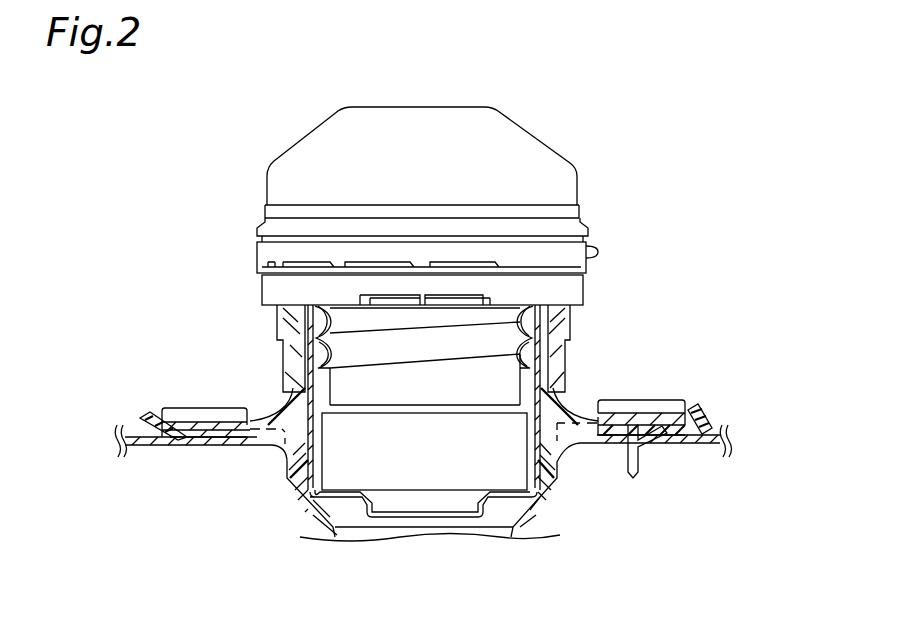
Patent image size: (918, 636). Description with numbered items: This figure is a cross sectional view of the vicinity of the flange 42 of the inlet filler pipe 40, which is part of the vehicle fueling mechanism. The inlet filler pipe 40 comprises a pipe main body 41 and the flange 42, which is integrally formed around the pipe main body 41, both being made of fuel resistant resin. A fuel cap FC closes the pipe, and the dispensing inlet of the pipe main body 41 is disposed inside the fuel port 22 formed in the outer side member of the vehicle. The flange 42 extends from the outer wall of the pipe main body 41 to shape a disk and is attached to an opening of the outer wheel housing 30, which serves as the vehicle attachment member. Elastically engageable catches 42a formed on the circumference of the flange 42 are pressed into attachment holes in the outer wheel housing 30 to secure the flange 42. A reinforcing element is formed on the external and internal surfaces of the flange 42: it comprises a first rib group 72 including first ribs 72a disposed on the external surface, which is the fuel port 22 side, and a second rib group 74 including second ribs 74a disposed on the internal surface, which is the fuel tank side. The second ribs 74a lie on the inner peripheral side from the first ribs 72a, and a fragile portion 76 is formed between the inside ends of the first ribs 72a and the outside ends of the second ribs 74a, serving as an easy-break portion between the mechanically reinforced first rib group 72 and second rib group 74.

The fuel port 22 is at (235, 165).
The fuel cap FC is at (530, 145).
The inlet filler pipe 40 is at (598, 322).
The pipe main body 41 is at (562, 350).
The second ribs 74a is at (573, 448).
The second rib group 74 is at (424, 464).
The flange 42 is at (672, 408).
The catches 42a is at (632, 480).
The fragile portion 76 is at (612, 410).
The first ribs 72a is at (665, 403).
The first rib group 72 is at (423, 418).
The outer wheel housing 30 is at (680, 443).